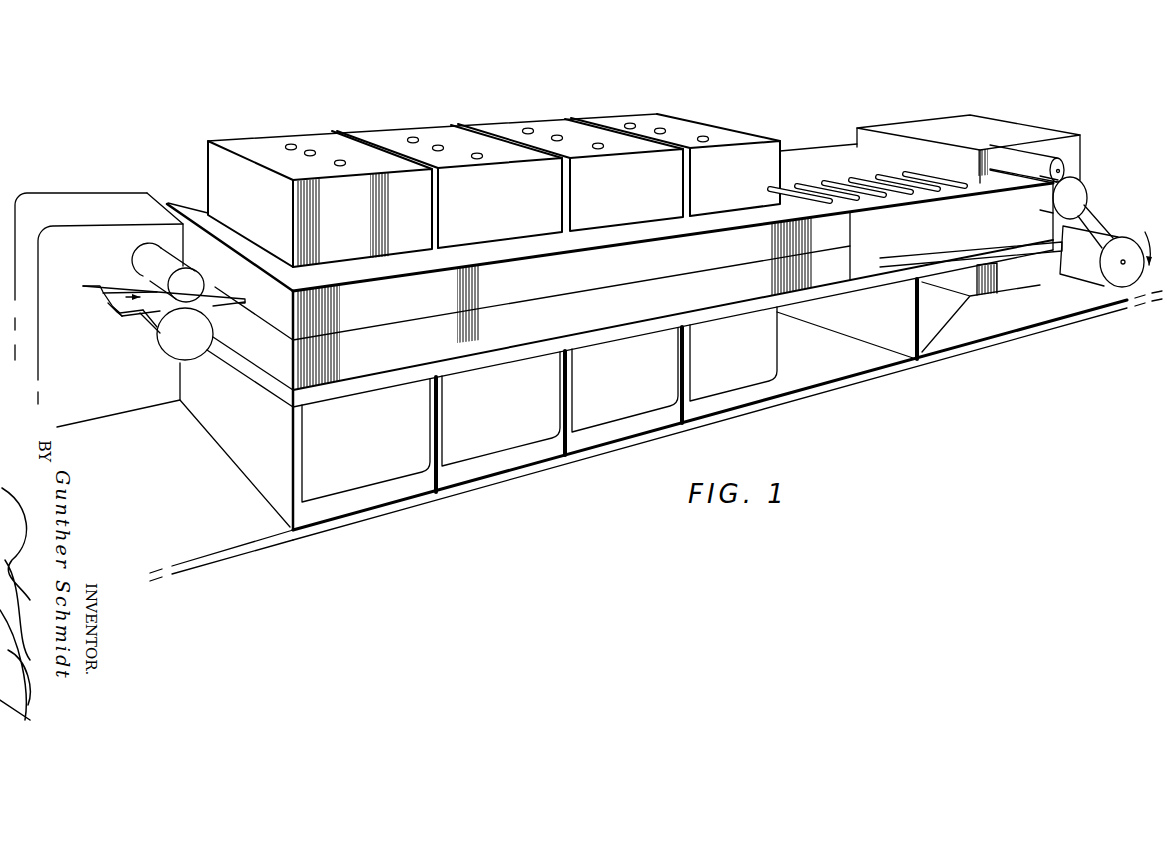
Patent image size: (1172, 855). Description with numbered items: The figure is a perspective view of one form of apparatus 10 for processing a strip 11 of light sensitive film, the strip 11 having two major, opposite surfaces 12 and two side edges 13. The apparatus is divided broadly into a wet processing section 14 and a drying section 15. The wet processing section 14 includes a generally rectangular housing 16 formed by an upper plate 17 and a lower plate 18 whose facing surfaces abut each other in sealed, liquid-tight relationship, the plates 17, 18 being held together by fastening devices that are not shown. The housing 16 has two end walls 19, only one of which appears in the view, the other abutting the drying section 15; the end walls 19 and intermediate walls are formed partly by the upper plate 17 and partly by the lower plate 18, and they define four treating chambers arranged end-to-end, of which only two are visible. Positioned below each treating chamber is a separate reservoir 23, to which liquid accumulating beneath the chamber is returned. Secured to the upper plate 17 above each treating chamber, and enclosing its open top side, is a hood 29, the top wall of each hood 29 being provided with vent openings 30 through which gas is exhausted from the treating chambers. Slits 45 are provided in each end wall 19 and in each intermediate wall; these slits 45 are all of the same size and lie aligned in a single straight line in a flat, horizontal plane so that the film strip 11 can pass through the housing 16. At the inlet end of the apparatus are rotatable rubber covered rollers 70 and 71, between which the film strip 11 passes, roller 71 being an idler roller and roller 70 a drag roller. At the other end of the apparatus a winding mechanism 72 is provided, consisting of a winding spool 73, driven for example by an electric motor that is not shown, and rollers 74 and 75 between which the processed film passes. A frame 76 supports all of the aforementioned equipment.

The apparatus 10 is at (658, 110).
The strip of light sensitive film 11 is at (107, 311).
The major opposite surfaces 12 is at (143, 318).
The side edges 13 is at (117, 282).
The wet processing section 14 is at (530, 328).
The drying section 15 is at (952, 243).
The housing 16 is at (380, 358).
The upper plate 17 is at (371, 314).
The lower plate 18 is at (621, 318).
The end walls 19 is at (258, 337).
The reservoir 23 is at (383, 463).
The hoods 29 is at (270, 150).
The vent openings 30 is at (309, 151).
The slits 45 is at (245, 299).
The drag roller 70 is at (173, 348).
The idler roller 71 is at (168, 247).
The winding mechanism 72 is at (1099, 176).
The winding spool 73 is at (1124, 249).
The roller 74 is at (1042, 165).
The roller 75 is at (1078, 203).
The frame 76 is at (837, 360).